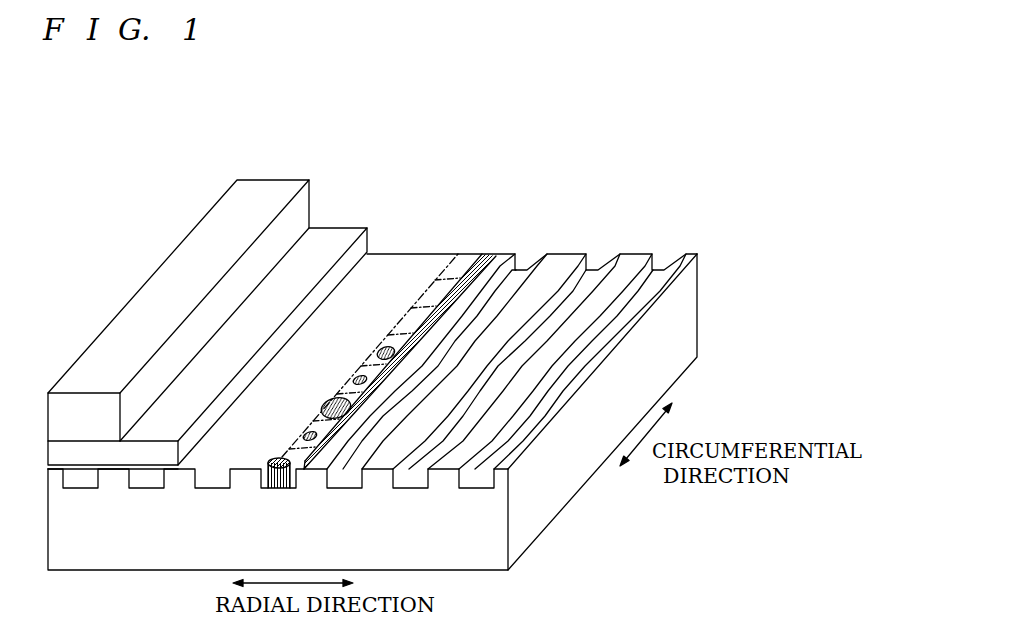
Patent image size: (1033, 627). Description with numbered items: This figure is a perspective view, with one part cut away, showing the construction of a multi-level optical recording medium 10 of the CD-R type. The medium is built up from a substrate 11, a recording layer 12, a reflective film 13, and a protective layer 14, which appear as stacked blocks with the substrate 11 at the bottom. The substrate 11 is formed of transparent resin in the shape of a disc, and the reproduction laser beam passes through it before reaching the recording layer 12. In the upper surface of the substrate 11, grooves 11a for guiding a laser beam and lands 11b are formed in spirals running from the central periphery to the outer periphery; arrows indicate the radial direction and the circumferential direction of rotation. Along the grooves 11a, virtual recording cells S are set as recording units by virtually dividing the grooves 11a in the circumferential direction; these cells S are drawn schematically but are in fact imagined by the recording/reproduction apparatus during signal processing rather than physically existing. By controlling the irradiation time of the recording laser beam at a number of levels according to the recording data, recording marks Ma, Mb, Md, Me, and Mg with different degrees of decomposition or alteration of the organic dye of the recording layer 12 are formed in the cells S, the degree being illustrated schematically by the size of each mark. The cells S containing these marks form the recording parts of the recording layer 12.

The optical recording medium 10 is at (448, 145).
The substrate 11 is at (587, 459).
The grooves 11a is at (524, 264).
The lands 11b is at (632, 263).
The recording layer 12 is at (205, 486).
The reflective film 13 is at (368, 243).
The protective layer 14 is at (311, 197).
The virtual recording cells S is at (476, 258).
The recording mark Ma is at (307, 431).
The recording mark Mb is at (356, 375).
The recording mark Md is at (385, 346).
The recording mark Me is at (274, 457).
The recording mark Mg is at (327, 397).